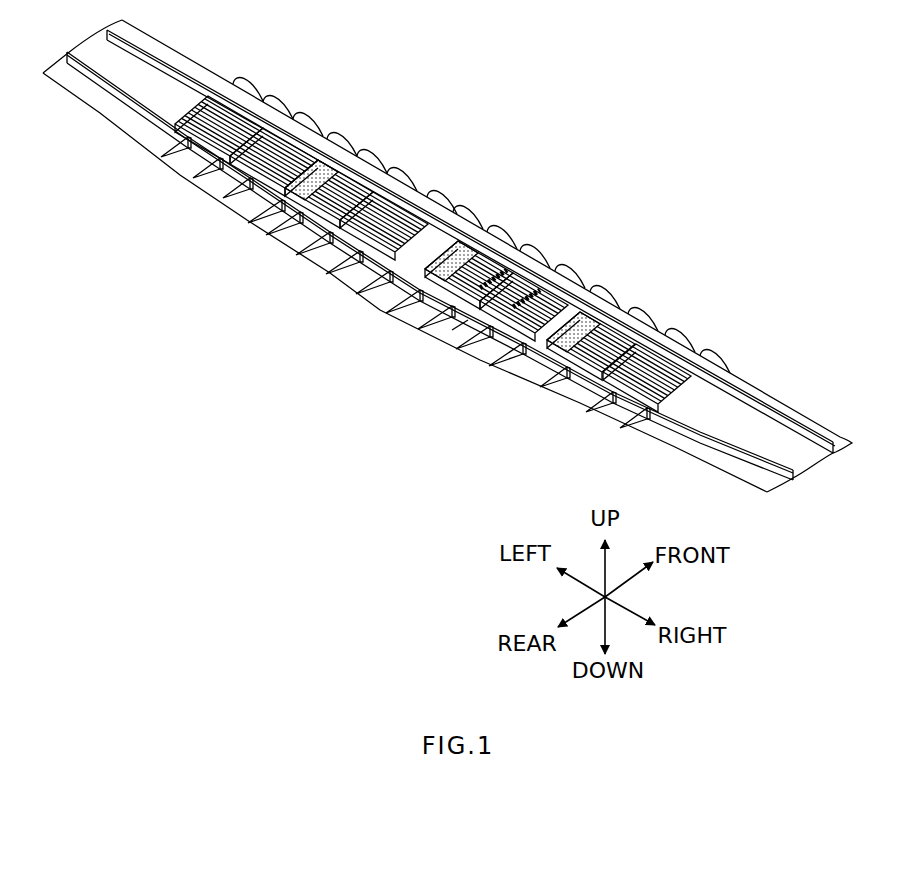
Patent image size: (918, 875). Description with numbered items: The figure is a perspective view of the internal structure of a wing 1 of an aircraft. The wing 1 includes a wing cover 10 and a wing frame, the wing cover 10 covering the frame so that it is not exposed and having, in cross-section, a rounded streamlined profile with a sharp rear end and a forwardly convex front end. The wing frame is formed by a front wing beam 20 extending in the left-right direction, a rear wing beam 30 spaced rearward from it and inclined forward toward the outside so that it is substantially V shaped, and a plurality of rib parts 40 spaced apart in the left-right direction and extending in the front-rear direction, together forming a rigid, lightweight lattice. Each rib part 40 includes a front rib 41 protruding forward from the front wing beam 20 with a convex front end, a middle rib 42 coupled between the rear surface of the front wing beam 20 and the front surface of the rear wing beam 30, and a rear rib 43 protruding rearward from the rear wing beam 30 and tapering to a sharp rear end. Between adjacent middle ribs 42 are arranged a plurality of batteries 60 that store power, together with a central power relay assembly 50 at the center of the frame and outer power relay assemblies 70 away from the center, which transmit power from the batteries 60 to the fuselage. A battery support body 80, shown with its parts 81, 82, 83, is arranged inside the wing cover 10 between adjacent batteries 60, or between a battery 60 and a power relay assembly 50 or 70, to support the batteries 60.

The wing 1 is at (447, 256).
The wing cover 10 is at (572, 282).
The front wing beam 20 is at (752, 393).
The rear wing beam 30 is at (707, 433).
The rib part 40 is at (469, 364).
The front rib 41 is at (552, 290).
The middle rib 42 is at (510, 290).
The rear rib 43 is at (462, 336).
The central power relay assembly 50 is at (455, 235).
The battery 60 is at (400, 190).
The outer power relay assembly 70 is at (335, 153).
The battery support body 80 is at (433, 243).
The battery support body 81 is at (500, 262).
The battery support body 82 is at (591, 281).
The battery support body 83 is at (345, 150).